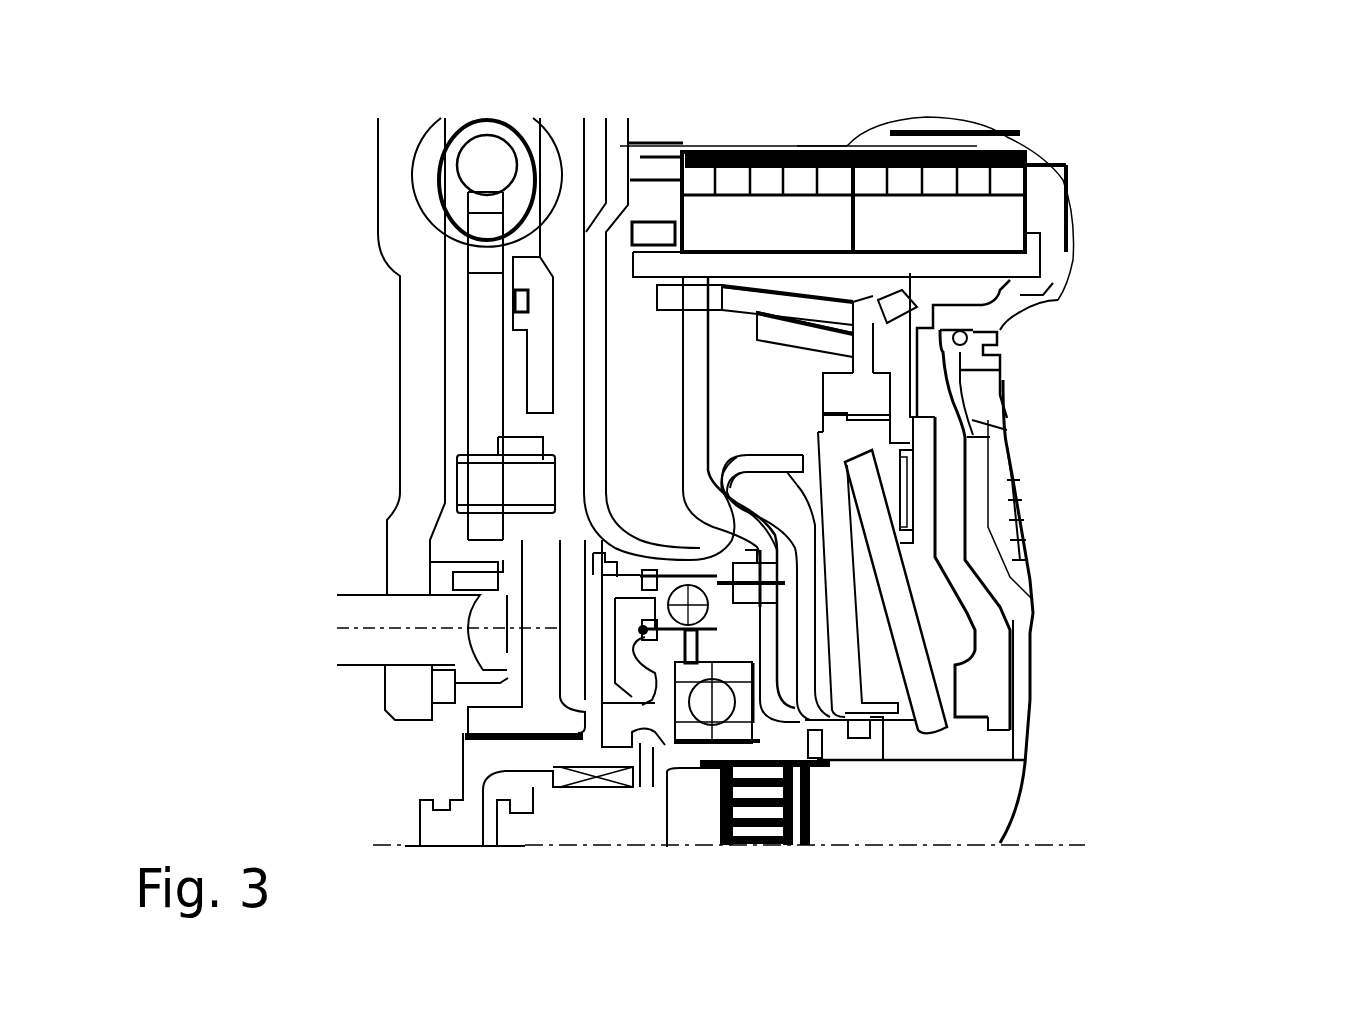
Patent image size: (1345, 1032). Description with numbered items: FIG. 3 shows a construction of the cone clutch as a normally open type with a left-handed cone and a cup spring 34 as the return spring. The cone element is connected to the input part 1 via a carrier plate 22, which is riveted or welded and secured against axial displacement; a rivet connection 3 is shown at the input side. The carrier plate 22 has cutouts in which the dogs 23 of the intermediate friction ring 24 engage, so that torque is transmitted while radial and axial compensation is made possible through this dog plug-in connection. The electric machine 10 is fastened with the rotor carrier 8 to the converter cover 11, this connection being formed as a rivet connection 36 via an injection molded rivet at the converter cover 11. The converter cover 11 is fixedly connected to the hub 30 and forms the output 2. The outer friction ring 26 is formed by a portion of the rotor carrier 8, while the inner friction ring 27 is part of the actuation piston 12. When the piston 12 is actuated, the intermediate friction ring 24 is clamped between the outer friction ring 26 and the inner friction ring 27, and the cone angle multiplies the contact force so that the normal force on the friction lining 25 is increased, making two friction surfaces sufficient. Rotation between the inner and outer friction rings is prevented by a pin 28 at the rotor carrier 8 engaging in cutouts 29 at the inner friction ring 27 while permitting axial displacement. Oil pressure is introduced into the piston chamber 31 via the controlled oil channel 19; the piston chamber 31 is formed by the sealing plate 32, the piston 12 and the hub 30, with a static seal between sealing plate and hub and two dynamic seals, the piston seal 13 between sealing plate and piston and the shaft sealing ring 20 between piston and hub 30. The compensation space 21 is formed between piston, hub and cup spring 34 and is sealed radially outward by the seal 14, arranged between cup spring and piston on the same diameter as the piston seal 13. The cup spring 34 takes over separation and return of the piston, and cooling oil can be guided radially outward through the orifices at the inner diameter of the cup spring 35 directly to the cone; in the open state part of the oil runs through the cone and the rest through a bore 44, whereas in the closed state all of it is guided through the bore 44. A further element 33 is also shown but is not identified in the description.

The input part 1 is at (503, 758).
The output 2 is at (960, 750).
The rivet connection 3 is at (870, 592).
The rotor carrier 8 is at (972, 266).
The electric machine 10 is at (985, 152).
The converter cover 11 is at (955, 450).
The actuation piston 12 is at (842, 448).
The piston seal 13 is at (847, 472).
The seal 14 is at (807, 482).
The controlled oil channel 19 is at (817, 747).
The shaft sealing ring 20 is at (860, 735).
The compensation space 21 is at (920, 663).
The carrier plate 22 is at (732, 483).
The dogs 23 is at (665, 302).
The intermediate friction ring 24 is at (777, 300).
The friction lining 25 is at (838, 282).
The outer friction ring 26 is at (857, 345).
The inner friction ring 27 is at (897, 305).
The pin 28 is at (967, 338).
The cutouts 29 is at (867, 390).
The hub 30 is at (765, 763).
The piston chamber 31 is at (700, 462).
The sealing plate 32 is at (757, 525).
The bolt 33 is at (543, 487).
The cup spring 34 is at (935, 710).
The orifices at the inner diameter of the cup spring 35 is at (950, 715).
The rivet connection 36 is at (907, 480).
The bore 44 is at (867, 368).